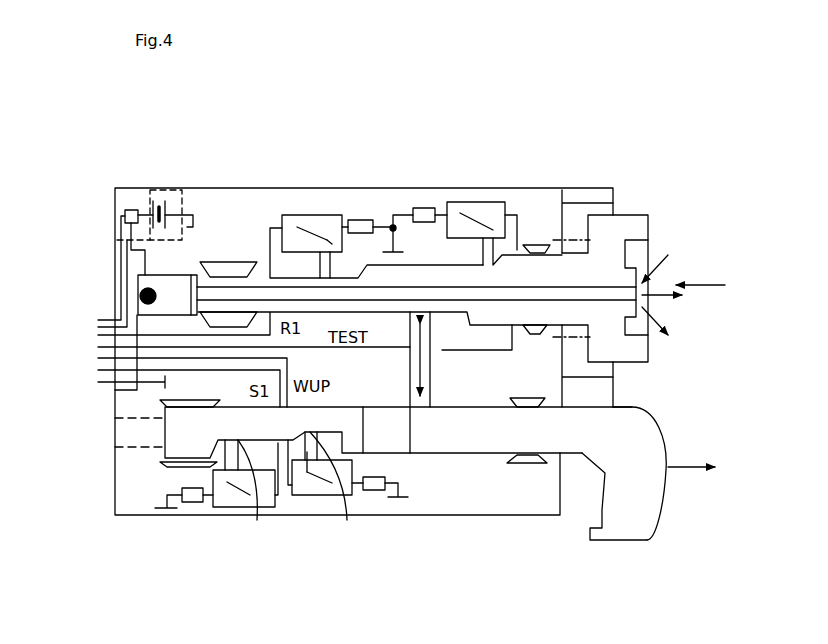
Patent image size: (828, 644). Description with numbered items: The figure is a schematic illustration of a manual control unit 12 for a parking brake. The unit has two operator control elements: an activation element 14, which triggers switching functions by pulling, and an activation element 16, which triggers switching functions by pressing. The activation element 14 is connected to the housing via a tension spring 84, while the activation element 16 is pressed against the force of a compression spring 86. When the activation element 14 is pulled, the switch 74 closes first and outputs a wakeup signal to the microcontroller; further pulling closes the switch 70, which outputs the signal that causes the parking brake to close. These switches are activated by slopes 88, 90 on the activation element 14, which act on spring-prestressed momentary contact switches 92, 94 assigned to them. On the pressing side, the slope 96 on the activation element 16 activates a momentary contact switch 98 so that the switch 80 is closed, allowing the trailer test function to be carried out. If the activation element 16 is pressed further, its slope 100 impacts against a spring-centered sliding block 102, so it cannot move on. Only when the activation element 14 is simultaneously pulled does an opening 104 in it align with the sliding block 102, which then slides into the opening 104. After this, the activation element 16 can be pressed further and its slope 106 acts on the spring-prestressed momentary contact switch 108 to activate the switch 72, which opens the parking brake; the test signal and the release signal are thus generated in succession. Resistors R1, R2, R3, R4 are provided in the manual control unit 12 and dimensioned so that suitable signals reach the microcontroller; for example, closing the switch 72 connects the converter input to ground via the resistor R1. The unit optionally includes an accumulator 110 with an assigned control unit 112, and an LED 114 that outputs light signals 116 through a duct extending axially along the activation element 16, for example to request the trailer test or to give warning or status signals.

The manual control unit 12 is at (93, 547).
The activation element 14 is at (619, 541).
The activation element 16 is at (630, 213).
The switch 70 is at (238, 507).
The switch 72 is at (303, 215).
The switch 74 is at (323, 495).
The switch 80 is at (470, 202).
The tension spring 84 is at (127, 449).
The compression spring 86 is at (573, 232).
The slope 88 is at (347, 520).
The slope 90 is at (227, 472).
The spring-prestressed momentary contact switch 92 is at (308, 455).
The spring-prestressed momentary contact switch 94 is at (257, 520).
The slope 96 is at (515, 247).
The relay armature 98 is at (488, 262).
The slope 100 is at (458, 335).
The sliding block 102 is at (408, 364).
The opening 104 is at (400, 445).
The slope 106 is at (337, 215).
The spring-prestressed momentary contact switch 108 is at (320, 265).
The accumulator 110 is at (165, 188).
The control unit 112 is at (126, 200).
The LED 114 is at (140, 293).
The light signals 116 is at (663, 253).
The resistor R1 is at (363, 220).
The resistor R2 is at (187, 503).
The resistor R3 is at (425, 208).
The resistor R4 is at (373, 490).